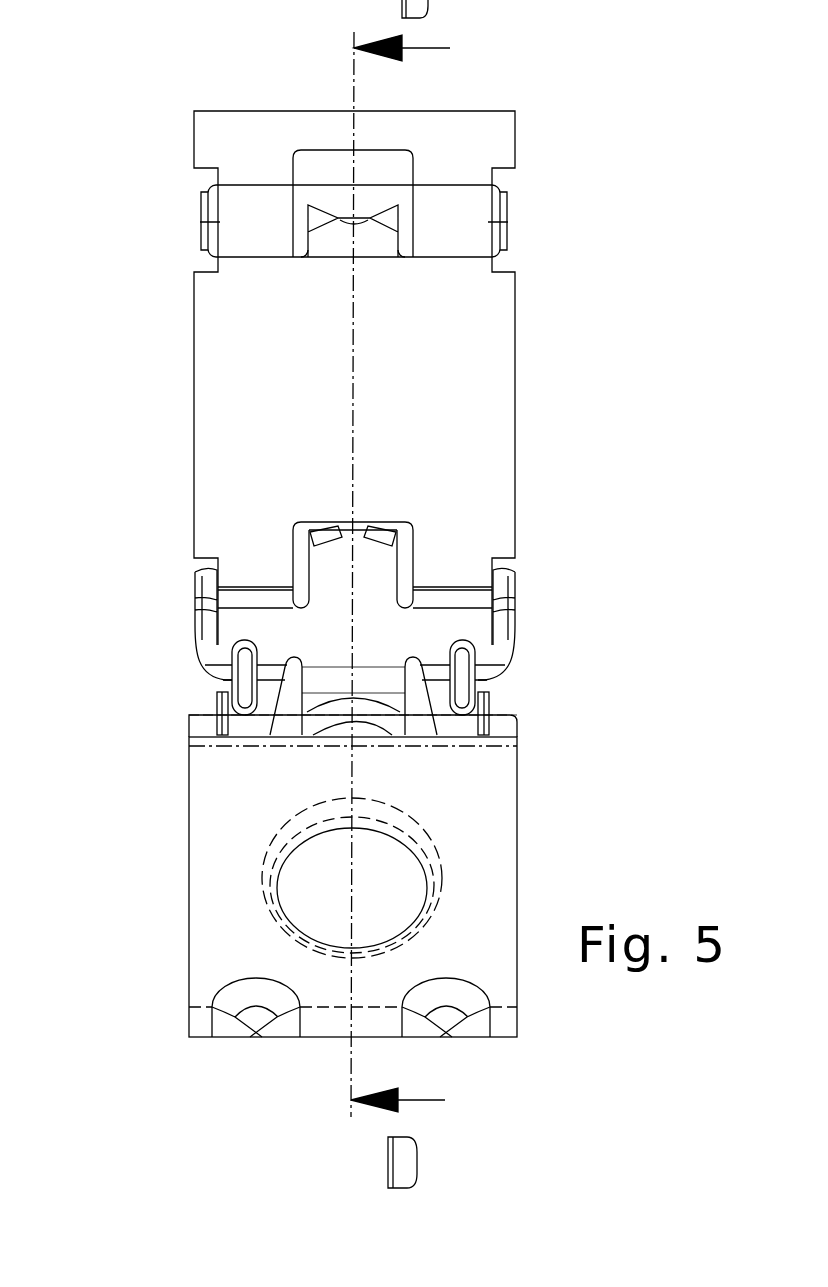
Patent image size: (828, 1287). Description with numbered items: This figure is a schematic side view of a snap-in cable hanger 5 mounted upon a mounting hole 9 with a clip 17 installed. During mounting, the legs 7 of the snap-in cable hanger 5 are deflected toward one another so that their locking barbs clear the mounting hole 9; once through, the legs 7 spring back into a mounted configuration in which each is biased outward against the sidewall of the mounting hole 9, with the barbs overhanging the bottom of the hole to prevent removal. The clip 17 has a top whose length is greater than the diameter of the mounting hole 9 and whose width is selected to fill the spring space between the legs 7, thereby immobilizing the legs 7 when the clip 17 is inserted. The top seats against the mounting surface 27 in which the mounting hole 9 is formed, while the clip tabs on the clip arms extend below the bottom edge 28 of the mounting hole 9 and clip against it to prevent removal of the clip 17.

The snap-in cable hanger 5 is at (465, 348).
The leg 7 is at (285, 722).
The mounting hole 9 is at (313, 884).
The clip 17 is at (515, 737).
The mounting surface 27 is at (493, 735).
The bottom edge 28 is at (325, 828).